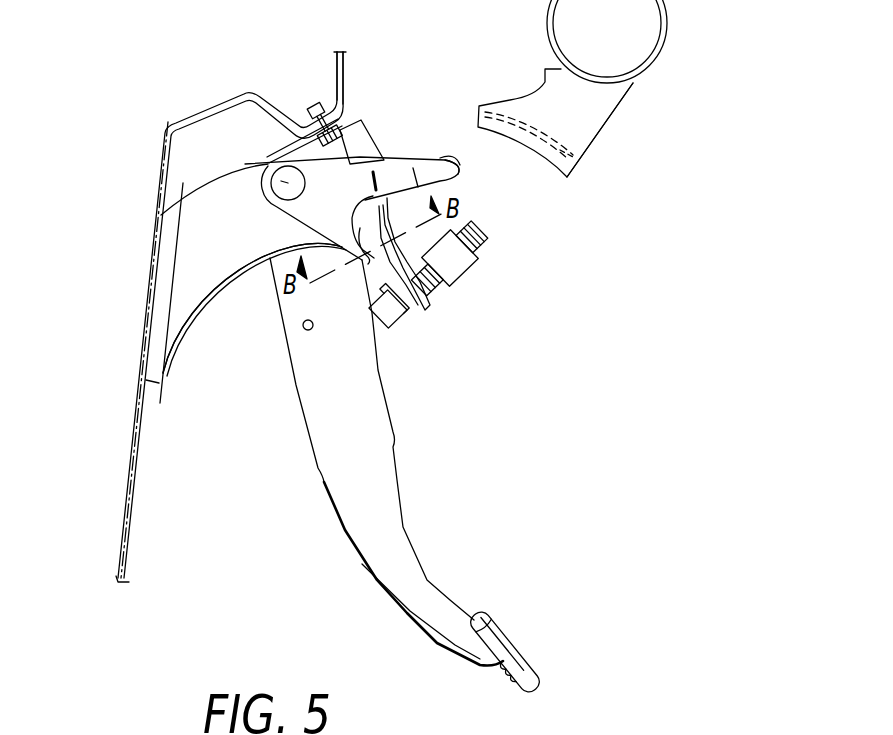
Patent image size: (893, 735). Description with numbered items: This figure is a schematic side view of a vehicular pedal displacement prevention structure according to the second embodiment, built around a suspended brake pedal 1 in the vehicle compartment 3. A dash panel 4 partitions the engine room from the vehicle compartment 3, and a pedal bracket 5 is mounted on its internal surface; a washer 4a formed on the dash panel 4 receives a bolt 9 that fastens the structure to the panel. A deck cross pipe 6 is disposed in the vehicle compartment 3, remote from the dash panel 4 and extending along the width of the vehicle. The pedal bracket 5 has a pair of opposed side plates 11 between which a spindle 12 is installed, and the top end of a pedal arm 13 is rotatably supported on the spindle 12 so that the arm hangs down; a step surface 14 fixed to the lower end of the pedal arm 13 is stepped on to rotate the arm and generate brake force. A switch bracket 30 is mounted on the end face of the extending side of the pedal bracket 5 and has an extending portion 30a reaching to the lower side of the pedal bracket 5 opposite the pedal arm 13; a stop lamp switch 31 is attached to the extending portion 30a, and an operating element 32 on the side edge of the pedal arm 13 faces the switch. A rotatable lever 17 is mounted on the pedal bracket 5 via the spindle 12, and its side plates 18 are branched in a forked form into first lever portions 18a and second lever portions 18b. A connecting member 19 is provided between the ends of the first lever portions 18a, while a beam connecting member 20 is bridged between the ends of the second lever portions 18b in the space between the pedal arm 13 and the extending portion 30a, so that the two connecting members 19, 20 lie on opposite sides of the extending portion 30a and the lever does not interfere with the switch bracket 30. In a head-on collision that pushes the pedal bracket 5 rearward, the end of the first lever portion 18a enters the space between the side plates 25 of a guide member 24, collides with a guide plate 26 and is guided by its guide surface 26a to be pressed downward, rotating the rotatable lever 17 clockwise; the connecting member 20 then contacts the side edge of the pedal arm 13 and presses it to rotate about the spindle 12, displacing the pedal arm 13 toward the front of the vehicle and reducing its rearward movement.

The brake pedal 1 is at (462, 367).
The vehicle compartment 3 is at (240, 516).
The dash panel 4 is at (137, 437).
The washer 4a is at (348, 62).
The pedal bracket 5 is at (190, 310).
The deck cross pipe 6 is at (665, 27).
The bolt 9 is at (313, 105).
The side plate 11 is at (208, 200).
The spindle 12 is at (268, 163).
The pedal arm 13 is at (382, 433).
The step surface 14 is at (500, 620).
The rotatable lever 17 is at (377, 163).
The side plate 18 is at (312, 207).
The first lever portion 18a is at (462, 181).
The second lever portion 18b is at (260, 250).
The connecting member 19 is at (452, 150).
The connecting member 20 is at (361, 263).
The guide member 24 is at (620, 110).
The side plate 25 is at (587, 133).
The guide plate 26 is at (515, 113).
The guide surface 26a is at (553, 165).
The switch bracket 30 is at (357, 140).
The extending portion 30a is at (422, 258).
The stop lamp switch 31 is at (458, 288).
The operating element 32 is at (393, 333).